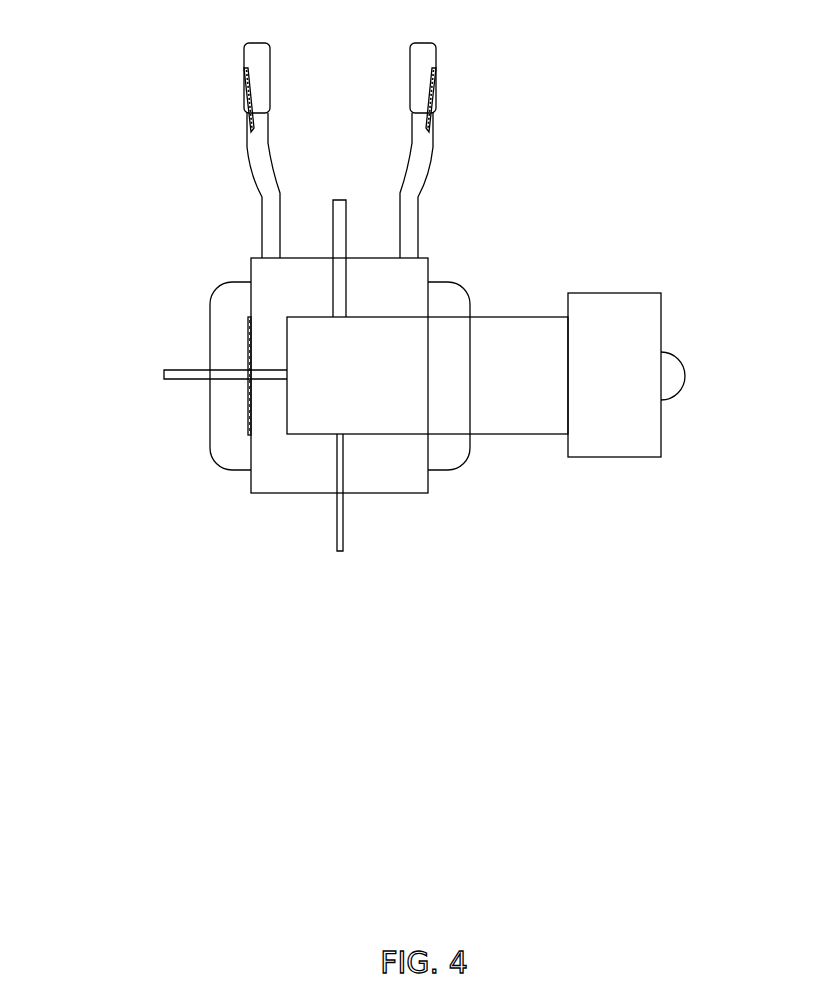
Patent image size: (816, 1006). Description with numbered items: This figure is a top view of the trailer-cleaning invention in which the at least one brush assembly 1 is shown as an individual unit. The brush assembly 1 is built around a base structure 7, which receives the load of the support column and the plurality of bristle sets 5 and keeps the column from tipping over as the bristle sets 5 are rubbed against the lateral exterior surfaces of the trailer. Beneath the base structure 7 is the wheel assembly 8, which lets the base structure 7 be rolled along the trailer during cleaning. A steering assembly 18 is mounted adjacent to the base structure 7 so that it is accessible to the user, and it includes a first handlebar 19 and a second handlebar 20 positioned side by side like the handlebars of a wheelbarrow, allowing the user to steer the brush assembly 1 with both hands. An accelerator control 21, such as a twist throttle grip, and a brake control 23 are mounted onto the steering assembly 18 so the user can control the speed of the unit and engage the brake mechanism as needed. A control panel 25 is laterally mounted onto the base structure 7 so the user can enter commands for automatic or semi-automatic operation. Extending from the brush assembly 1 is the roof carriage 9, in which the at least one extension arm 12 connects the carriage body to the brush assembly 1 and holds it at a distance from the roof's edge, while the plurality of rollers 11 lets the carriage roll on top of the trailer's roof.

The brush assembly 1 is at (310, 560).
The plurality of bristle sets 5 is at (340, 272).
The base structure 7 is at (386, 483).
The wheel assembly 8 is at (222, 452).
The roof carriage 9 is at (558, 518).
The plurality of rollers 11 is at (653, 427).
The extension arm 12 is at (518, 335).
The steering assembly 18 is at (122, 87).
The first handlebar 19 is at (416, 177).
The second handlebar 20 is at (262, 175).
The accelerator control 21 is at (433, 80).
The brake control 23 is at (247, 88).
The control panel 25 is at (235, 350).